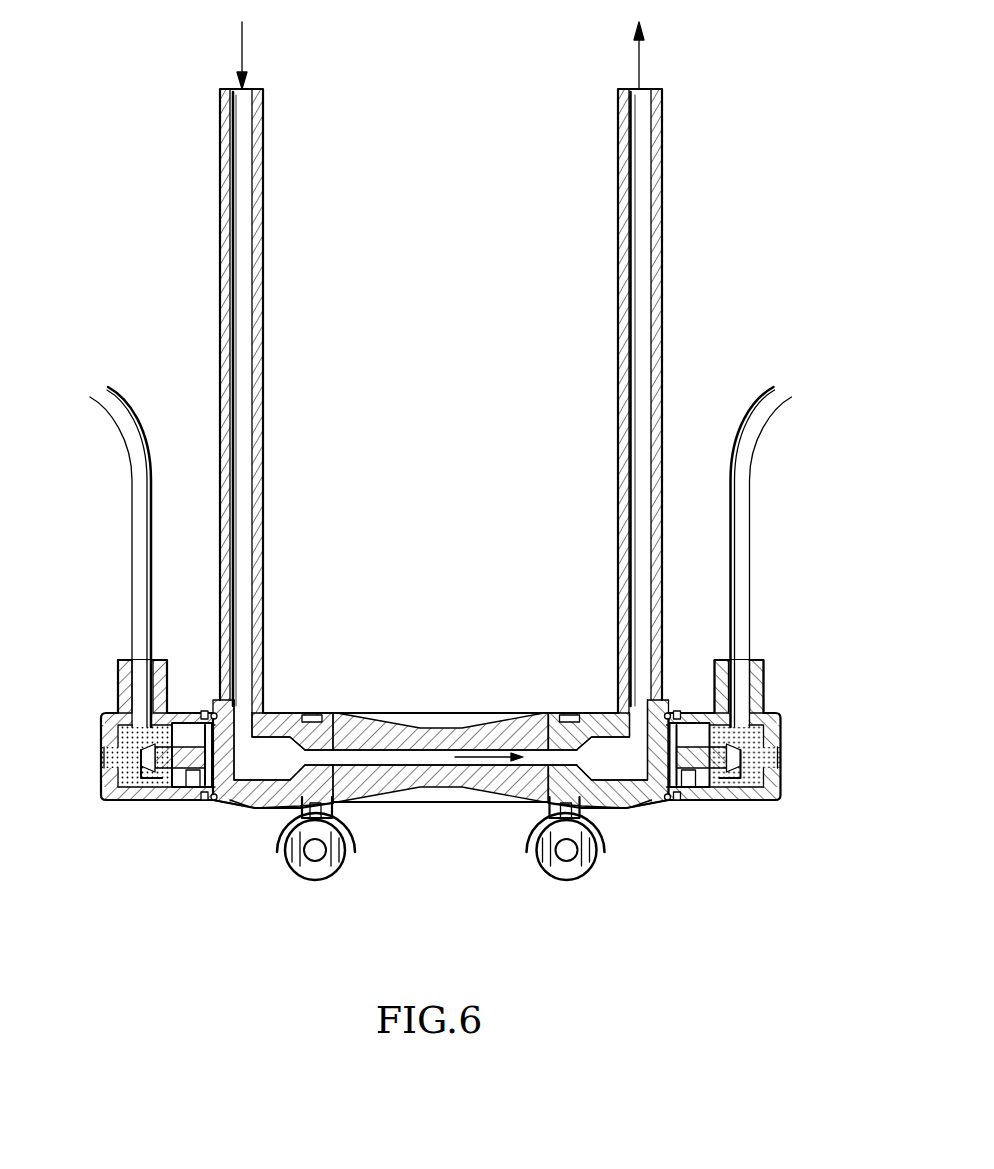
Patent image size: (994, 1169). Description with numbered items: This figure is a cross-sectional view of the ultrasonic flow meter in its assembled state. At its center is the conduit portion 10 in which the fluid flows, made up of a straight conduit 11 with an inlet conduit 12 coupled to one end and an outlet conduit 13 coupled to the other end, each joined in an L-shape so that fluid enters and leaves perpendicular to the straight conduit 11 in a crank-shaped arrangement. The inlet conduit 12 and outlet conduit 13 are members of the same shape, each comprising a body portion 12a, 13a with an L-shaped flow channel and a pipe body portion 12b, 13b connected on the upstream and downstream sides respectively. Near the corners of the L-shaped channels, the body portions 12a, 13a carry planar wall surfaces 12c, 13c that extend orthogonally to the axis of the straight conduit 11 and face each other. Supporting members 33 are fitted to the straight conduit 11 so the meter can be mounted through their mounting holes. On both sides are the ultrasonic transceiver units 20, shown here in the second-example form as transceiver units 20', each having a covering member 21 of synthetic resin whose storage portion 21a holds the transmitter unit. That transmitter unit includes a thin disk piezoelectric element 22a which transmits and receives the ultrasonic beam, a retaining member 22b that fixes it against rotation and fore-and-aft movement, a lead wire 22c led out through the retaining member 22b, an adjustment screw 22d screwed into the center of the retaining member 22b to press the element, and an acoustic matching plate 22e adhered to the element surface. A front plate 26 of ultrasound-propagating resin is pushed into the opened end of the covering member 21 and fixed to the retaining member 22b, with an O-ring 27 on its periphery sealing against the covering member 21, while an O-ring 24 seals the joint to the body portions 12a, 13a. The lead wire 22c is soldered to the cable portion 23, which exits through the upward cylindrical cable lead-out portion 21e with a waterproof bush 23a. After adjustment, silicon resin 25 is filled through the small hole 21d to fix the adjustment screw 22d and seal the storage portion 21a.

The conduit portion 10 is at (442, 711).
The straight conduit 11 is at (457, 792).
The inlet conduit 12 is at (272, 190).
The body portion 12a is at (275, 796).
The pipe body portion 12b is at (227, 160).
The wall surface 12c is at (300, 718).
The outlet conduit 13 is at (672, 258).
The body portion 13a is at (626, 800).
The pipe body portion 13b is at (657, 183).
The wall surface 13c is at (582, 718).
The ultrasonic transceiver unit 20 is at (761, 730).
The ultrasonic transceiver unit 20' is at (121, 730).
The covering member 21 is at (108, 796).
The storage portion 21a is at (125, 801).
The small hole 21d is at (108, 770).
The cable lead-out portion 21e is at (120, 685).
The piezoelectric element 22a is at (193, 793).
The retaining member 22b is at (148, 790).
The lead wire 22c is at (185, 795).
The adjustment screw 22d is at (175, 786).
The acoustic matching plate 22e is at (242, 802).
The cable portion 23 is at (132, 552).
The waterproof bush 23a is at (128, 658).
The O-ring 24 is at (211, 711).
The silicon resin 25 is at (125, 742).
The front plate 26 is at (230, 755).
The O-ring 27 is at (203, 711).
The supporting member 33 is at (335, 862).